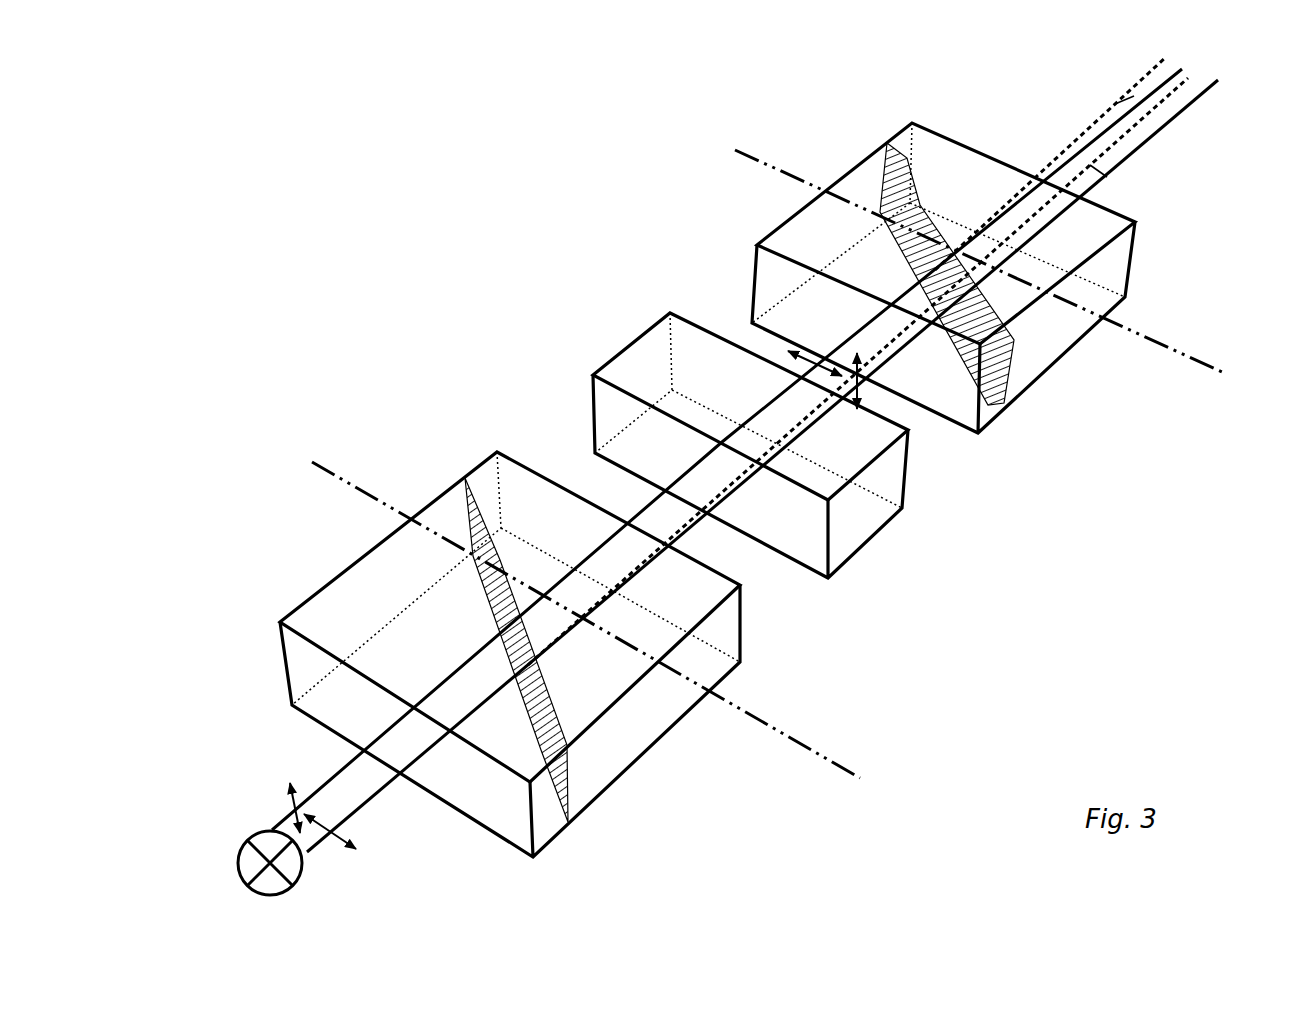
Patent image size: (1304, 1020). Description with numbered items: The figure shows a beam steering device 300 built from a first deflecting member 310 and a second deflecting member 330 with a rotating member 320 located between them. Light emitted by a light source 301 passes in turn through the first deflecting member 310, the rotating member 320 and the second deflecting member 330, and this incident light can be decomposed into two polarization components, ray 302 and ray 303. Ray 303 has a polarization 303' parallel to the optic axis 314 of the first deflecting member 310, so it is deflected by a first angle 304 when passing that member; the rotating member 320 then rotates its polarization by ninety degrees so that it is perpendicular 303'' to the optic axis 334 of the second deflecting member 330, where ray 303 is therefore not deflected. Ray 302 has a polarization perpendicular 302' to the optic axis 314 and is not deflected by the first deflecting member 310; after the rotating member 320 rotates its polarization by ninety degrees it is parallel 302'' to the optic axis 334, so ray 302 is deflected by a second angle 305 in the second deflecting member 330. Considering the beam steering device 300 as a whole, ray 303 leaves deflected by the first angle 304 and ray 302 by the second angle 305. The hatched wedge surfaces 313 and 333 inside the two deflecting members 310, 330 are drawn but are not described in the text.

The beam steering device 300 is at (1128, 626).
The light source 301 is at (237, 863).
The ray 302 is at (718, 449).
The polarization perpendicular to the optic axis 302' is at (247, 808).
The polarization parallel to the optic axis 302'' is at (762, 312).
The ray 303 is at (762, 466).
The polarization parallel to the optic axis 303' is at (370, 848).
The polarization perpendicular to the optical axes 303'' is at (943, 427).
The first angle 304 is at (1107, 177).
The second angle 305 is at (1117, 103).
The first deflecting member 310 is at (386, 437).
The wedge interface of first displacer 313 is at (572, 785).
The optic axis 314 is at (797, 742).
The rotating member 320 is at (583, 297).
The second deflecting member 330 is at (786, 146).
The wedge interface of second displacer 333 is at (1010, 382).
The optic axis 334 is at (1200, 362).